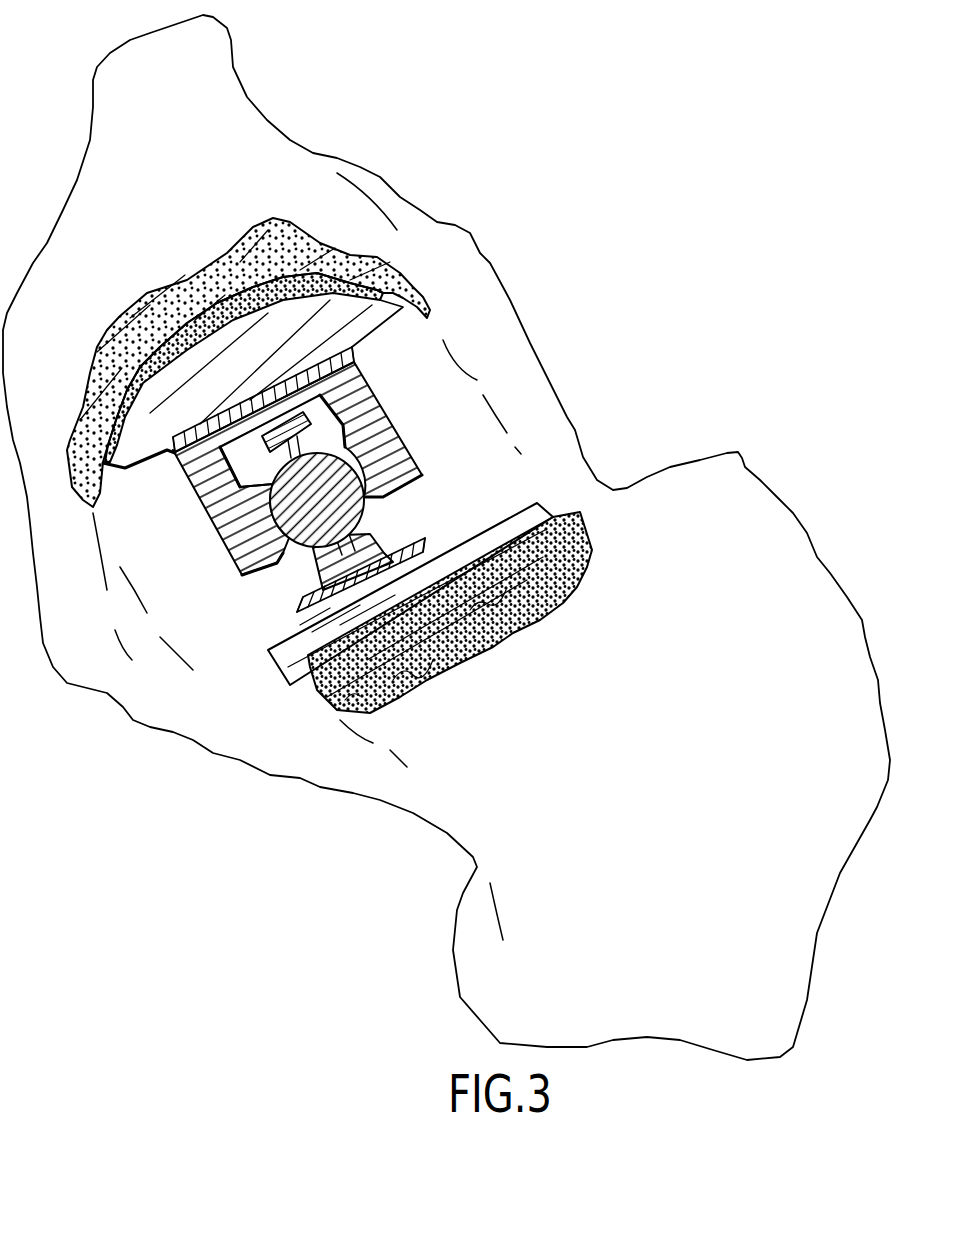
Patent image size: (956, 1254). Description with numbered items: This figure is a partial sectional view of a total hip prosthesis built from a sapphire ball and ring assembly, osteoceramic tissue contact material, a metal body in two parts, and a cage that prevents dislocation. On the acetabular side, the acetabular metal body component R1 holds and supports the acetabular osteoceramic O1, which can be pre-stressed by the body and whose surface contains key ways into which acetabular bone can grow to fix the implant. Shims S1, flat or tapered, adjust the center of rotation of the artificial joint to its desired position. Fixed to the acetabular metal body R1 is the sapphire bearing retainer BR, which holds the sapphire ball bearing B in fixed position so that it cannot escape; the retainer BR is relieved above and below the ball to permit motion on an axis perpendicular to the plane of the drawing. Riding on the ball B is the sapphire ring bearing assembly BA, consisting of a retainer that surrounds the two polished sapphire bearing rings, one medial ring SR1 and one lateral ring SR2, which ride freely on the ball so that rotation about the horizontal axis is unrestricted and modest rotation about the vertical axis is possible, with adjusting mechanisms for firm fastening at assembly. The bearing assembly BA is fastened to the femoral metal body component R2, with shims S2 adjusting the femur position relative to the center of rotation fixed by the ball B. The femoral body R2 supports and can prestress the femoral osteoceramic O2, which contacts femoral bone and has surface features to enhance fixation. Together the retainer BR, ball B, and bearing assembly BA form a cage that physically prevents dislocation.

The acetabular osteoceramic O1 is at (290, 291).
The acetabular metal body component R1 is at (302, 328).
The shims S1 is at (352, 348).
The sapphire bearing retainer BR is at (384, 399).
The lateral sapphire bearing ring SR2 is at (318, 422).
The medial sapphire bearing ring SR1 is at (258, 461).
The sapphire ball bearing B is at (300, 513).
The sapphire ring bearing assembly BA is at (388, 545).
The shims S2 is at (433, 542).
The femoral metal body component R2 is at (517, 523).
The femoral osteoceramic O2 is at (497, 569).